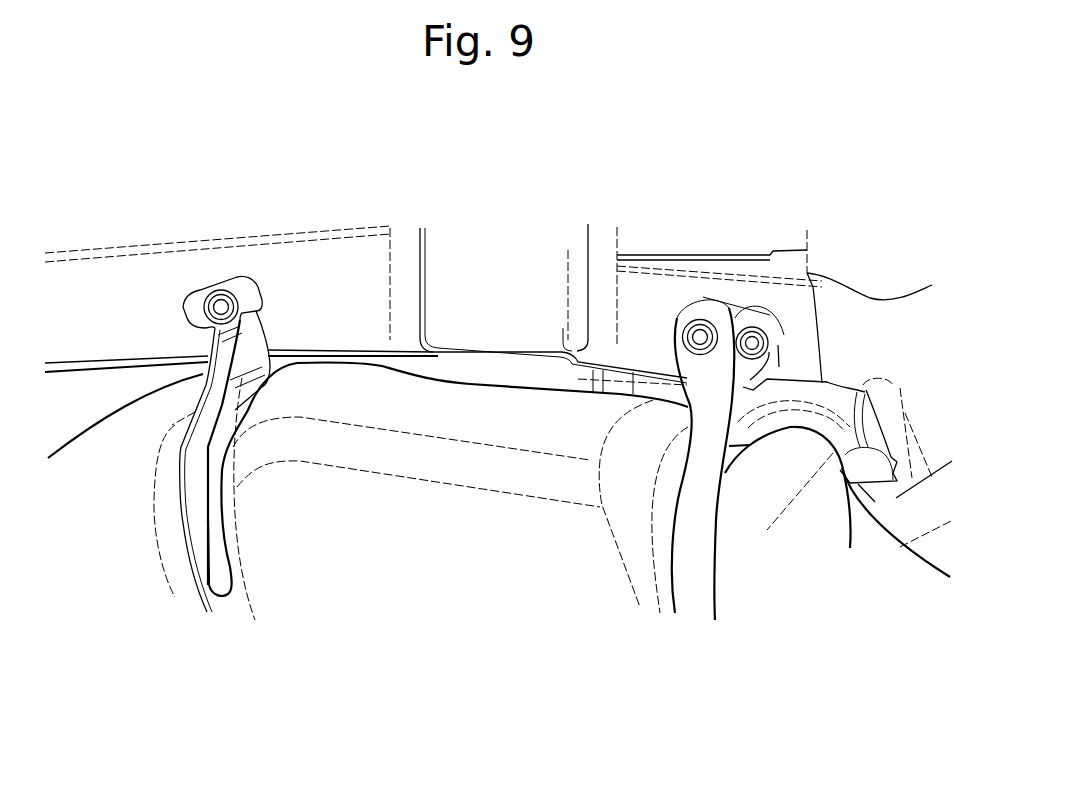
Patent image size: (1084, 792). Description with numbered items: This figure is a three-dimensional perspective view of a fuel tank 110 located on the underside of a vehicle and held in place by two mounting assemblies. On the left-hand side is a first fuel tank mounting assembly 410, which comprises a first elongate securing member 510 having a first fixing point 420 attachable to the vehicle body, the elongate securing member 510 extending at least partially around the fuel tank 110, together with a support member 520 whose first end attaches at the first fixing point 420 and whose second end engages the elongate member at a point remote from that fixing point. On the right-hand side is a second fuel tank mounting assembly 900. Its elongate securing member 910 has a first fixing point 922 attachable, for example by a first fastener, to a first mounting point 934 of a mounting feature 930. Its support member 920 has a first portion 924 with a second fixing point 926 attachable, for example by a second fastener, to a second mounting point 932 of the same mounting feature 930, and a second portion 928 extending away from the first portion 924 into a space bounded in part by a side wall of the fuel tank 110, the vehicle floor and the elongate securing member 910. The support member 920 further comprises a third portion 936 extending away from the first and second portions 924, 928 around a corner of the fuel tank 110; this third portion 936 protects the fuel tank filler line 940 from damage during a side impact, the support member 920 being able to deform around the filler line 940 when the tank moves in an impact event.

The fuel tank 110 is at (453, 546).
The first fuel tank mounting assembly 410 is at (287, 677).
The first fixing point 420 is at (214, 290).
The first elongate securing member 510 is at (222, 613).
The support member 520 is at (198, 523).
The second fuel tank mounting assembly 900 is at (775, 678).
The elongate securing member 910 is at (680, 557).
The support member 920 is at (850, 548).
The first fixing point 922 is at (681, 334).
The first portion 924 is at (780, 360).
The second fixing point 926 is at (772, 362).
The second portion 928 is at (746, 413).
The mounting feature 930 is at (727, 302).
The second mounting point 932 is at (761, 328).
The first mounting point 934 is at (696, 320).
The third portion 936 is at (875, 431).
The fuel tank filler line 940 is at (923, 520).